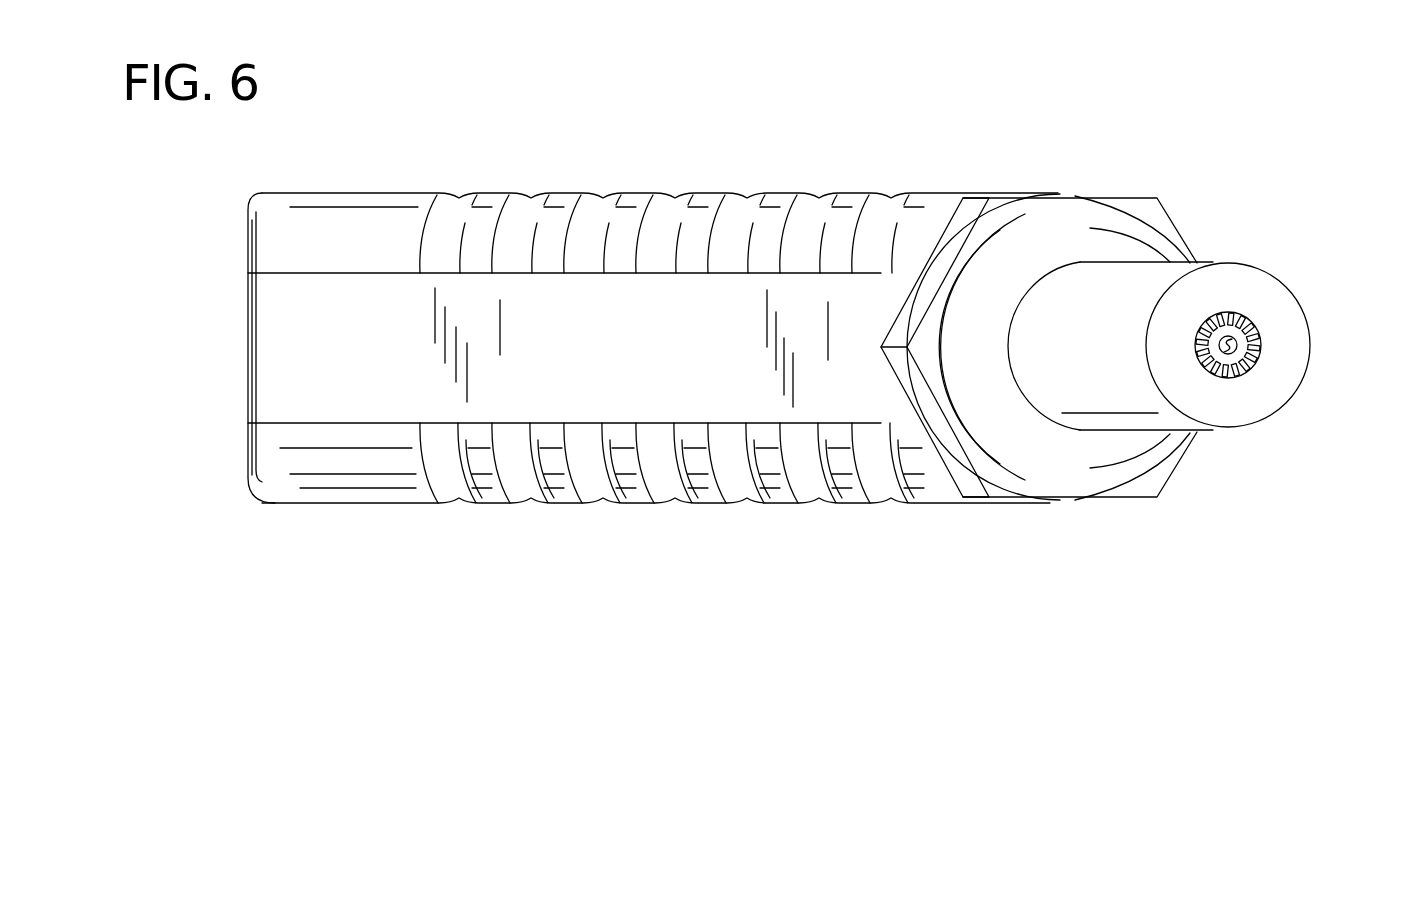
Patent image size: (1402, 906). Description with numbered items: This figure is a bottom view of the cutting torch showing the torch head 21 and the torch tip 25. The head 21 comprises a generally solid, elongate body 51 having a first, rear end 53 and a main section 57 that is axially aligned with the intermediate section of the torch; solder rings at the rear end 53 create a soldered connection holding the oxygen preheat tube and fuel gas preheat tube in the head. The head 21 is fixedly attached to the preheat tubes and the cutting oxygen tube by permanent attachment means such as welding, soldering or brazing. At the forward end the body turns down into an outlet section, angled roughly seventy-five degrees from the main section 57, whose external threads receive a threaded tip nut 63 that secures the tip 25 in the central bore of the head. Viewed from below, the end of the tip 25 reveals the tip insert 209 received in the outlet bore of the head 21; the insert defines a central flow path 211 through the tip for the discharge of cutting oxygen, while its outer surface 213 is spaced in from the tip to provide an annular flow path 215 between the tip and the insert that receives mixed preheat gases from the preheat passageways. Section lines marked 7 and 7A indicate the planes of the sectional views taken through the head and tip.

The head 21 is at (388, 504).
The body 51 is at (942, 504).
The first (rear) end 53 is at (257, 475).
The main section 57 is at (665, 205).
The threaded tip nut 63 is at (1130, 196).
The torch tip 25 is at (1245, 262).
The tip insert 209 is at (1243, 356).
The central flow path 211 is at (1262, 345).
The outer surface 213 is at (1237, 341).
The annular flow path 215 is at (1242, 312).
The section line 7 is at (917, 137).
The section line 7A is at (170, 425).